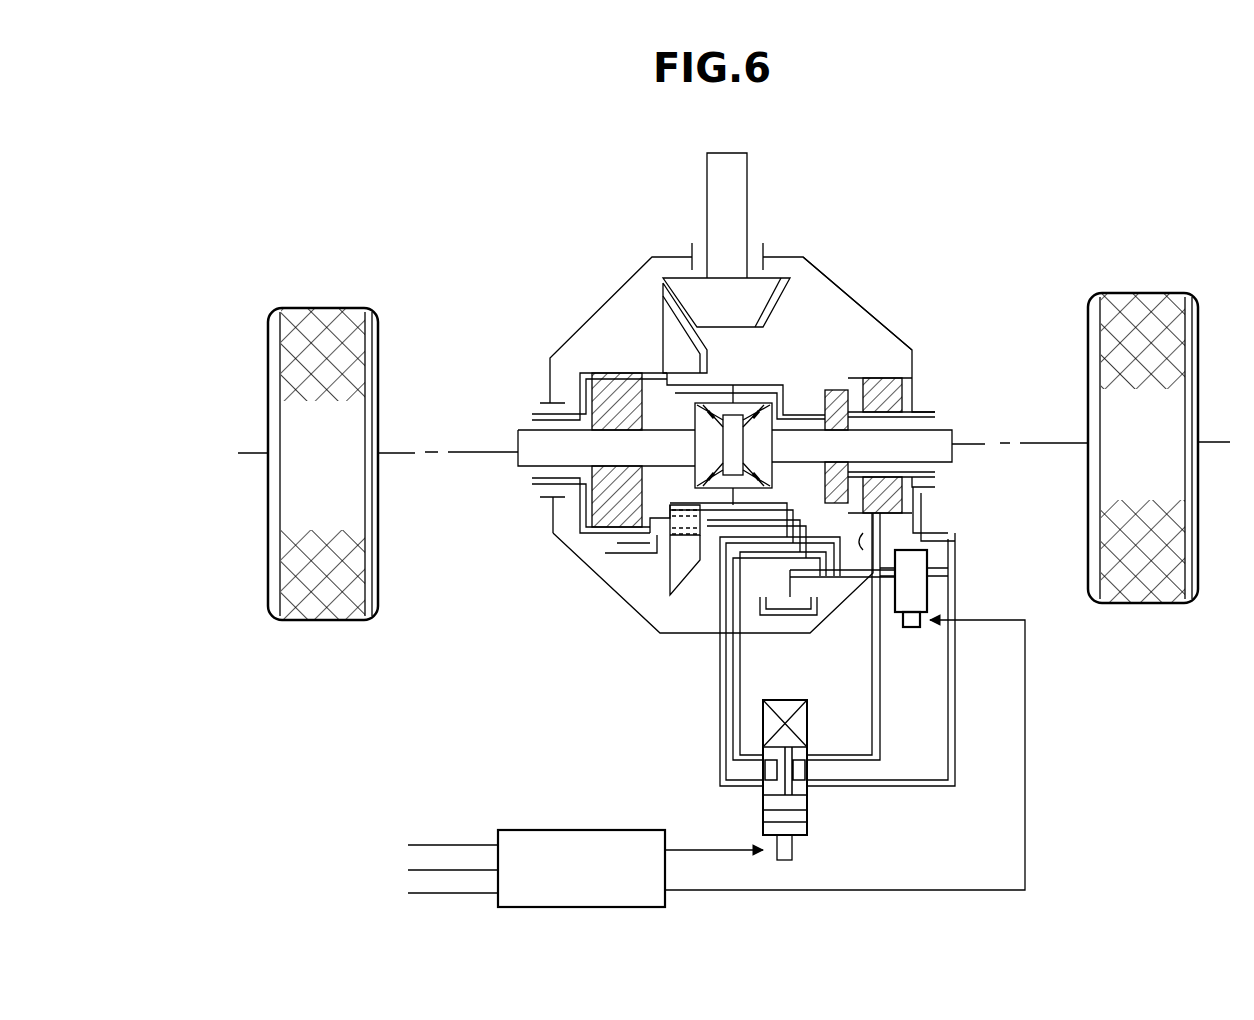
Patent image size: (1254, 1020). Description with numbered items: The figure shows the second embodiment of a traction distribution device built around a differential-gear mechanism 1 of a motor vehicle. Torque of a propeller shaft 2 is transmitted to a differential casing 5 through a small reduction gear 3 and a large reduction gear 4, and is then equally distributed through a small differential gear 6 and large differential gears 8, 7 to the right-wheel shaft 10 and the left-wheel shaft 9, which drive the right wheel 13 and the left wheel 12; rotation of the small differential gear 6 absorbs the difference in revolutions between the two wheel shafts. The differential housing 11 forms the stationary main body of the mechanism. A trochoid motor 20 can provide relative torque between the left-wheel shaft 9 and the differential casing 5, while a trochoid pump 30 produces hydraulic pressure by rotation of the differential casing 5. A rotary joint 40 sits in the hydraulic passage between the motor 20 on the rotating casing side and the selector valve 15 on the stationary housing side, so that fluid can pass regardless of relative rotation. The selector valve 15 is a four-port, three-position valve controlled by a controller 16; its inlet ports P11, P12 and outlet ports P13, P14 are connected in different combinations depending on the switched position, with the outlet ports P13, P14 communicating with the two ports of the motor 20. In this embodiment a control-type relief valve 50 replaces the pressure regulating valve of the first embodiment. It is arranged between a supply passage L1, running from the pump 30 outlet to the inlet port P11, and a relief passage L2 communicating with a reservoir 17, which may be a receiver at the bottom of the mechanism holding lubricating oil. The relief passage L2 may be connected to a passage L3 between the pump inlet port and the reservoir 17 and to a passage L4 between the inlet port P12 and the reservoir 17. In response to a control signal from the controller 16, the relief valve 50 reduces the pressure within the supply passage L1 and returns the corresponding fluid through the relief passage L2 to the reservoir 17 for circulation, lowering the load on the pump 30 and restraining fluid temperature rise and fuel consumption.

The differential-gear mechanism 1 is at (815, 258).
The propeller shaft 2 is at (712, 185).
The small reduction gear 3 is at (760, 288).
The large reduction gear 4 is at (670, 325).
The differential casing 5 is at (580, 373).
The small differential gear 6 is at (745, 405).
The large differential gear 7 is at (708, 430).
The large differential gear 8 is at (760, 430).
The left-wheel shaft 9 is at (525, 440).
The right-wheel shaft 10 is at (935, 438).
The differential housing 11 is at (845, 292).
The left wheel 12 is at (312, 308).
The right wheel 13 is at (1132, 295).
The selector valve 15 is at (763, 715).
The controller 16 is at (520, 830).
The reservoir 17 is at (790, 616).
The trochoid motor 20 is at (590, 510).
The trochoid pump 30 is at (915, 383).
The rotary joint 40 is at (833, 388).
The control-type relief valve 50 is at (920, 560).
The supply passage L1 is at (955, 594).
The relief passage L2 is at (943, 507).
The passage L3 is at (847, 658).
The passage L4 is at (880, 683).
The inlet port P11 is at (808, 783).
The inlet port P12 is at (808, 757).
The outlet port P13 is at (763, 783).
The outlet port P14 is at (763, 757).